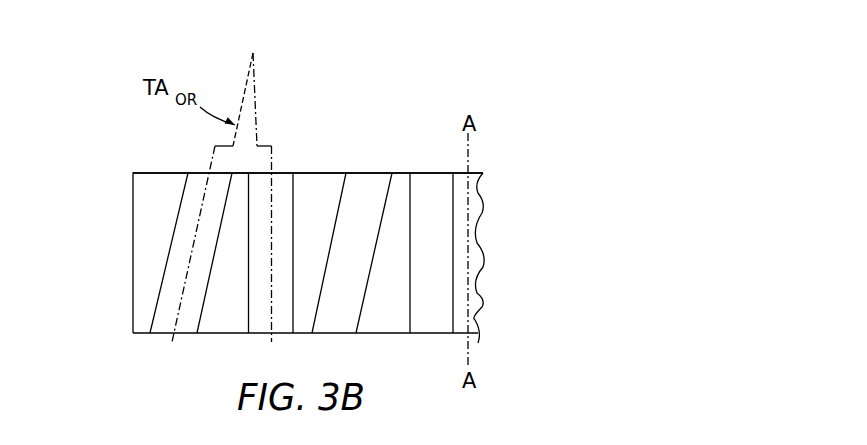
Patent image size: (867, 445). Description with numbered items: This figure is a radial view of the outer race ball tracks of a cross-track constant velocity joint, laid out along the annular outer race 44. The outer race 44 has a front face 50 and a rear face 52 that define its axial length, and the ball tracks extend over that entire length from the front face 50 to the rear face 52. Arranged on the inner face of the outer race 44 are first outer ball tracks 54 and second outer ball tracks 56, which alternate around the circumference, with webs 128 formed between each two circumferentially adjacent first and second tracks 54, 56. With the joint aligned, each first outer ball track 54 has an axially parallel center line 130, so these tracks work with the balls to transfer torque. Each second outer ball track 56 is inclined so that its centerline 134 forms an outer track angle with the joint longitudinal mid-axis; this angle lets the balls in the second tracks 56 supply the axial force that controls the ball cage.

The outer race 44 is at (328, 160).
The front face 50 is at (150, 172).
The rear face 52 is at (397, 335).
The first outer ball track 54 is at (281, 188).
The second outer ball track 56 is at (177, 253).
The web 128 is at (220, 320).
The center line 130 is at (272, 247).
The centerline 134 is at (198, 212).